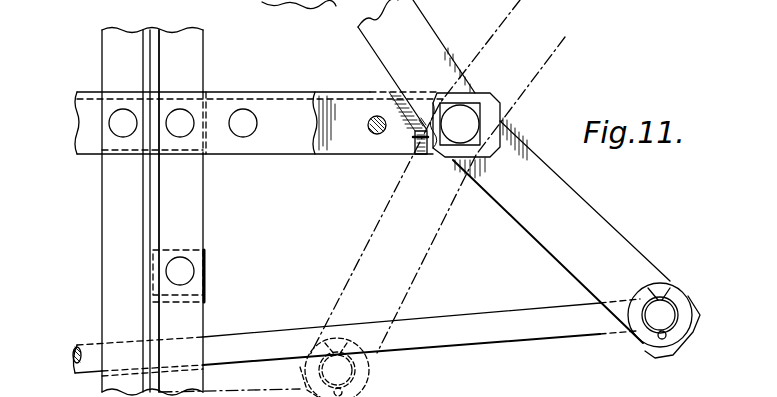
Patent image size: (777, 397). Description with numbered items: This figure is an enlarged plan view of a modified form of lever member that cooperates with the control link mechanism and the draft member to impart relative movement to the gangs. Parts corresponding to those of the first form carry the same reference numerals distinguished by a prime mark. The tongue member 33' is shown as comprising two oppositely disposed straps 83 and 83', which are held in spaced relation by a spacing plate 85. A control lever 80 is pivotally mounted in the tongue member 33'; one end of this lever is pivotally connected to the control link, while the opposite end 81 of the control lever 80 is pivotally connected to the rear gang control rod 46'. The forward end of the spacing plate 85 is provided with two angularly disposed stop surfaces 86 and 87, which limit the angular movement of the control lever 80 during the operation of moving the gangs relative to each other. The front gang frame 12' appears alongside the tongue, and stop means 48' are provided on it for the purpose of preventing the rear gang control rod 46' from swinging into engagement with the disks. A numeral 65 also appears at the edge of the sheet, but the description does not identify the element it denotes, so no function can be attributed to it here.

The front gang frame 12' is at (173, 212).
The tongue member 33' is at (260, 148).
The rear gang control rod 46' is at (386, 340).
The stop means 48' is at (200, 287).
The control lever 80 is at (440, 38).
The opposite end of control lever 81 is at (537, 231).
The strap 83 is at (256, 139).
The strap 83' is at (469, 139).
The spacing plate 85 is at (347, 144).
The stop surface 86 is at (415, 140).
The stop surface 87 is at (387, 99).
The part of adjacent figure 65 is at (755, 394).